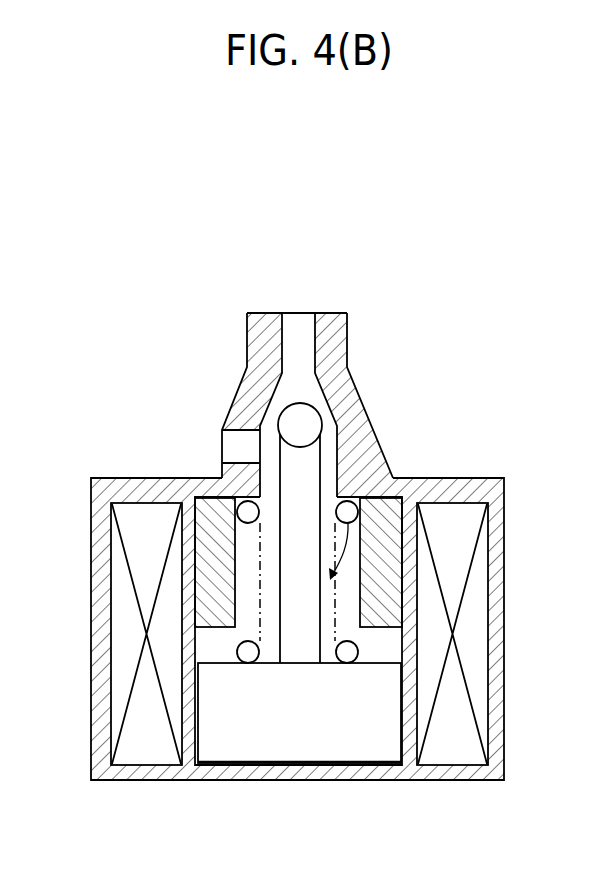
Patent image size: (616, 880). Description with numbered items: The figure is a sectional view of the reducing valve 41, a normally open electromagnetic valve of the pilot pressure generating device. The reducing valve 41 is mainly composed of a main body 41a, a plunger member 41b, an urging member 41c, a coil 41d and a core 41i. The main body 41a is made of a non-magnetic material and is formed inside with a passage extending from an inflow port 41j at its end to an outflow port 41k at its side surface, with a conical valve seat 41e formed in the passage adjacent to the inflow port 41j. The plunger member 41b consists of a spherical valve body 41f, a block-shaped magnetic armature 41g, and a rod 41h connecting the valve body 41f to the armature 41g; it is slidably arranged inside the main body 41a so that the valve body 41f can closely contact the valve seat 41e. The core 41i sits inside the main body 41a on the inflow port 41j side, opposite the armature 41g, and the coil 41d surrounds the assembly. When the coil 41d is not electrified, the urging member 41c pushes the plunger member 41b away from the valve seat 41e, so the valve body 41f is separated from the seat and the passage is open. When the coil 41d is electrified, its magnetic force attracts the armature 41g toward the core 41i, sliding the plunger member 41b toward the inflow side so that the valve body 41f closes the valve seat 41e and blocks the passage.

The reducing valve 41 is at (307, 109).
The main body 41a is at (136, 463).
The plunger member 41b is at (385, 460).
The urging member 41c is at (362, 621).
The coil 41d is at (472, 607).
The valve seat 41e is at (283, 408).
The valve body 41f is at (365, 423).
The armature 41g is at (300, 730).
The rod 41h is at (292, 628).
The core 41i is at (215, 542).
The inflow port 41j is at (300, 338).
The outflow port 41k is at (240, 448).